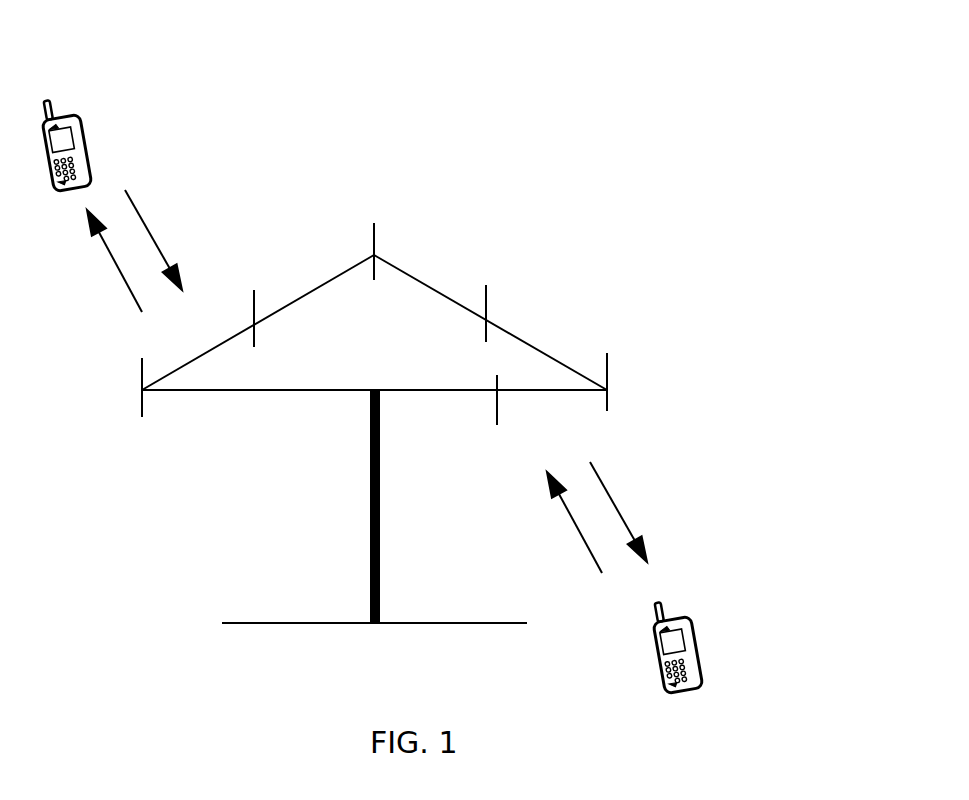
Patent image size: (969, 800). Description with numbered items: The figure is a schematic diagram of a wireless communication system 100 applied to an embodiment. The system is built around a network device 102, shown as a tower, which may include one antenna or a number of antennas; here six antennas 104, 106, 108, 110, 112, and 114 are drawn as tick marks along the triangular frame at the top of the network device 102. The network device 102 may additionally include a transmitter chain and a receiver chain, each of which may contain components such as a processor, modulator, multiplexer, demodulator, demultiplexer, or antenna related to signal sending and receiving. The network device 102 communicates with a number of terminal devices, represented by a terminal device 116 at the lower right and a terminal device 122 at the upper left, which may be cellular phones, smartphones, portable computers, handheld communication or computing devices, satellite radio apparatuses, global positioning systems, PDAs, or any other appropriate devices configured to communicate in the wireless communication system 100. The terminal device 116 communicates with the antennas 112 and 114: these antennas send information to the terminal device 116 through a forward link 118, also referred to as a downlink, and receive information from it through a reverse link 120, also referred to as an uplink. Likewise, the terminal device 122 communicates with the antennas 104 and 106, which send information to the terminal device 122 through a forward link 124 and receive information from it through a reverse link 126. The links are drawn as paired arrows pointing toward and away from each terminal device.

The wireless communication system 100 is at (558, 100).
The network device 102 is at (380, 555).
The antenna 104 is at (143, 400).
The antenna 106 is at (256, 332).
The antenna 108 is at (376, 243).
The antenna 110 is at (488, 300).
The antenna 112 is at (609, 370).
The antenna 114 is at (498, 418).
The terminal device 116 is at (700, 638).
The forward link 118 is at (605, 487).
The reverse link 120 is at (590, 552).
The terminal device 122 is at (88, 123).
The forward link 124 is at (118, 273).
The reverse link 126 is at (142, 215).